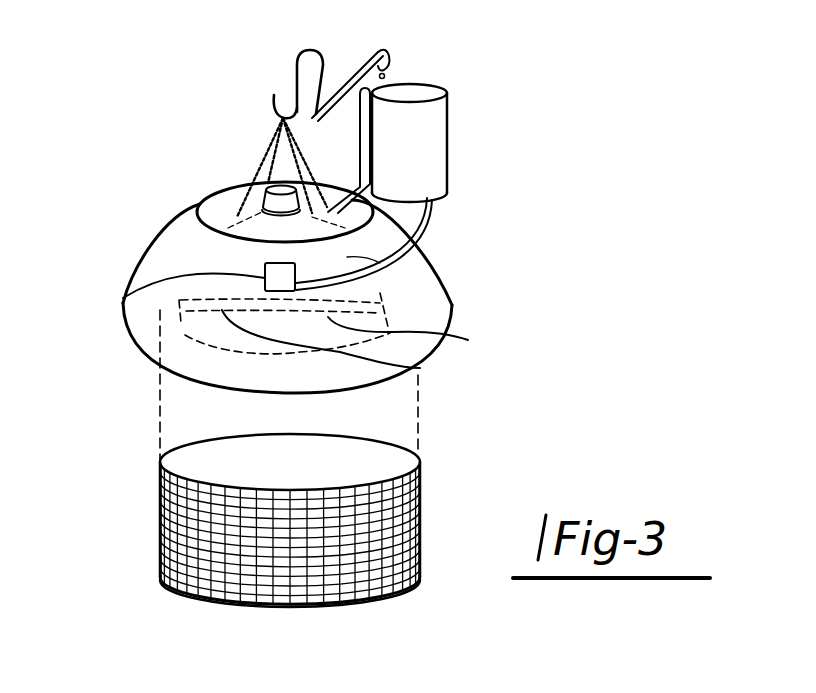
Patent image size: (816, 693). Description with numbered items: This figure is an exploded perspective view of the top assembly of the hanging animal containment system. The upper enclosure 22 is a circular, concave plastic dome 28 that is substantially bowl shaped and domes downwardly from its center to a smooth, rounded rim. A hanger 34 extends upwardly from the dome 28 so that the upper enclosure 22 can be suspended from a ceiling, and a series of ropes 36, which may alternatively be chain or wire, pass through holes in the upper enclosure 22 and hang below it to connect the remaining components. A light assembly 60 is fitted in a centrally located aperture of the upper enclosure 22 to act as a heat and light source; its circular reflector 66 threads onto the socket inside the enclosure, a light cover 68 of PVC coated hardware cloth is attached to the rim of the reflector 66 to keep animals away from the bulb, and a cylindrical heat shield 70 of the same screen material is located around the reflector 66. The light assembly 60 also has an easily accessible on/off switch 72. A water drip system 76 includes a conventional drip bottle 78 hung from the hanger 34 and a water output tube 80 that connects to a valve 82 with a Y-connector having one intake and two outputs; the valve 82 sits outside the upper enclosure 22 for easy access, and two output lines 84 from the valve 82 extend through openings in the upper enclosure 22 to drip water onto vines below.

The upper enclosure 22 is at (404, 34).
The dome 28 is at (177, 252).
The hanger 34 is at (296, 67).
The ropes 36 is at (263, 130).
The light assembly 60 is at (243, 197).
The reflector 66 is at (390, 272).
The light cover 68 is at (288, 607).
The heat shield 70 is at (160, 498).
The on/off switch 72 is at (307, 570).
The water drip system 76 is at (420, 97).
The drip bottle 78 is at (449, 109).
The water output tube 80 is at (437, 220).
The valve 82 is at (123, 298).
The output lines 84 is at (343, 330).